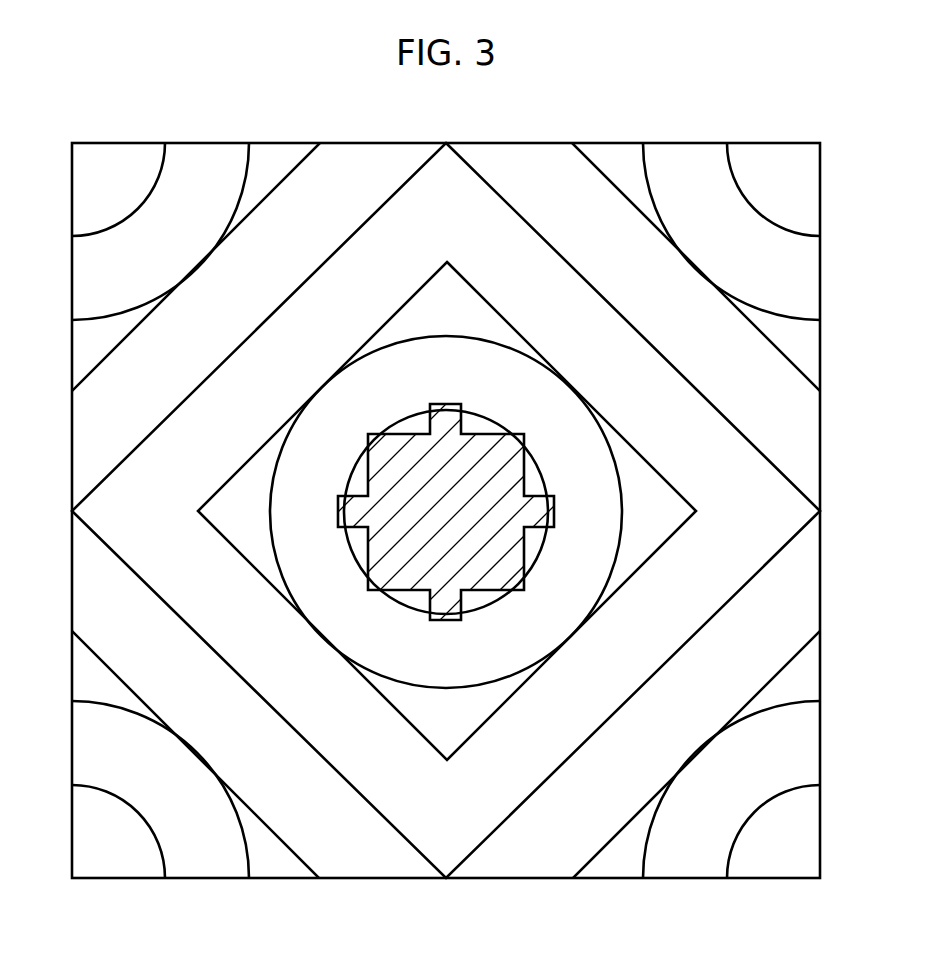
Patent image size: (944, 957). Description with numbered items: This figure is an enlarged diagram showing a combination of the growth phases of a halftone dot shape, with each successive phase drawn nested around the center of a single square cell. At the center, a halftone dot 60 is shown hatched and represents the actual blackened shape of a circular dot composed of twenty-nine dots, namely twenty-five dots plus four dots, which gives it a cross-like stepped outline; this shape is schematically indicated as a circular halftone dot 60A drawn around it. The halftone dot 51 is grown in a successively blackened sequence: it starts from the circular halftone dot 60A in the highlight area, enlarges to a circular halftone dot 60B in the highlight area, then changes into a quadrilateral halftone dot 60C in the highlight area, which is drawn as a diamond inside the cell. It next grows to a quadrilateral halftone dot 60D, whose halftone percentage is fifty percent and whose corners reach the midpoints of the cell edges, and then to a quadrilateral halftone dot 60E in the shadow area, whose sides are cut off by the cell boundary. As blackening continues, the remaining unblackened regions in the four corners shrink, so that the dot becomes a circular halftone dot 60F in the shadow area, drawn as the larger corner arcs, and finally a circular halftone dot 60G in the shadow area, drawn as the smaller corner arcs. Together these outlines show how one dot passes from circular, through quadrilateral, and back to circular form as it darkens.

The halftone dot 51 is at (605, 143).
The halftone dot 60 is at (497, 445).
The circular halftone dot 60A is at (400, 605).
The circular halftone dot 60B is at (402, 342).
The quadrilateral halftone dot 60C is at (413, 297).
The quadrilateral halftone dot 60D is at (90, 530).
The quadrilateral halftone dot 60E is at (98, 653).
The circular halftone dot 60F is at (235, 815).
The circular halftone dot 60G is at (132, 808).